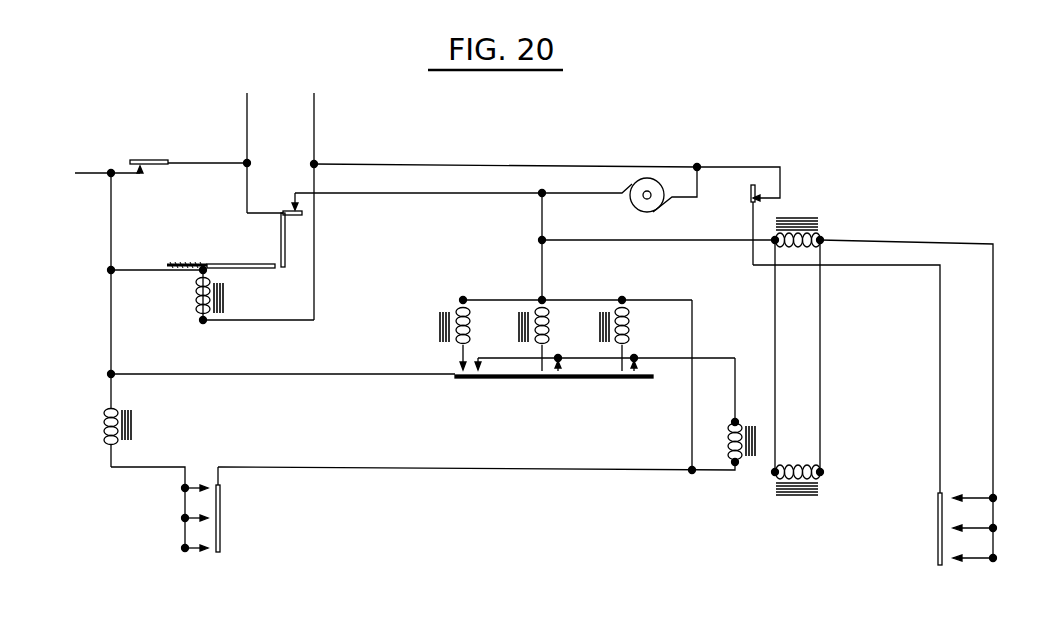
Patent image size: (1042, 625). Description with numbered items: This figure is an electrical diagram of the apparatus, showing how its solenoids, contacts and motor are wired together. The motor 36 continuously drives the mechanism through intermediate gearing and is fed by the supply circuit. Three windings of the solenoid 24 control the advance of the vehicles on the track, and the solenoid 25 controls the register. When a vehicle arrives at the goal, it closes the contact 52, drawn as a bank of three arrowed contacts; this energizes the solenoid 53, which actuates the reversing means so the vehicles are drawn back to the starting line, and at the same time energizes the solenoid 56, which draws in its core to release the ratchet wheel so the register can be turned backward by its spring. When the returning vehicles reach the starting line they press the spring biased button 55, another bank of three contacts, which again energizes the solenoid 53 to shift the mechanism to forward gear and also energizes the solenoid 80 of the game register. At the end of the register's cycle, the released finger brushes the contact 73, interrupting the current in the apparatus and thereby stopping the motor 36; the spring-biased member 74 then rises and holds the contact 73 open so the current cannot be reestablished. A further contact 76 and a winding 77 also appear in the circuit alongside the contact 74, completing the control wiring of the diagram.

The solenoid 24 is at (470, 334).
The solenoid 25 is at (731, 448).
The motor 36 is at (644, 197).
The contact element 52 is at (178, 509).
The solenoid 53 is at (807, 239).
The spring biased button 55 is at (984, 529).
The solenoid 56 is at (799, 460).
The contact 73 is at (290, 211).
The member 74 is at (253, 263).
The contact 76 is at (134, 159).
The relay coil 77 is at (195, 298).
The solenoid 80 is at (104, 432).